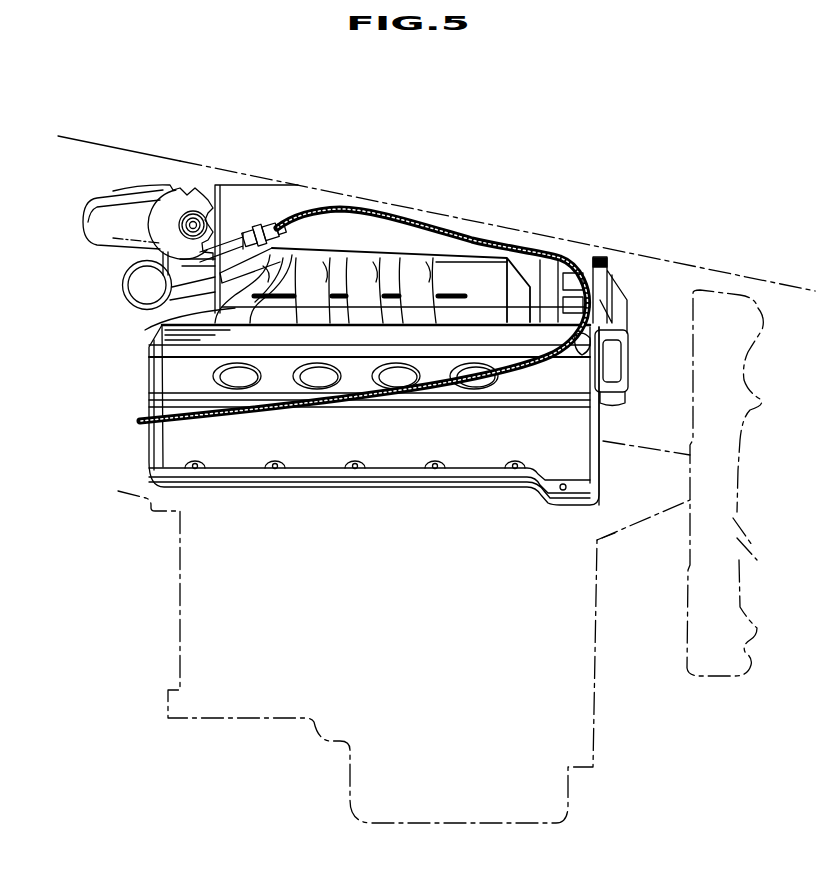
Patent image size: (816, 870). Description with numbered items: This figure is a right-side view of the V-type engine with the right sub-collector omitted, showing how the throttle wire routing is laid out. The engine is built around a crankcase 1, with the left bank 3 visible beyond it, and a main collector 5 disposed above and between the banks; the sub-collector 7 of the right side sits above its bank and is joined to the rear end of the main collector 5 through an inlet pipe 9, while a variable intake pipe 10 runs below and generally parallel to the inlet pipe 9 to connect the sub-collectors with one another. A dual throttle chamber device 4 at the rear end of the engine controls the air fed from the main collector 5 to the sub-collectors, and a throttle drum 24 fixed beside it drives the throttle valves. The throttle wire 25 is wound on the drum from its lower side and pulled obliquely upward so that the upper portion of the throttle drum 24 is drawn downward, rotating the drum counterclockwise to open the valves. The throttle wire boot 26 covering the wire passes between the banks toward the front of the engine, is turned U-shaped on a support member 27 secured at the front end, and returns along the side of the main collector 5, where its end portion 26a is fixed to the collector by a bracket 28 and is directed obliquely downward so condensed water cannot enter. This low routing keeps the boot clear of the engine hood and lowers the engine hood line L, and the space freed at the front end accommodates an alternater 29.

The crankcase 1 is at (429, 556).
The bank 3 is at (405, 455).
The throttle chamber device 4 is at (200, 200).
The main collector 5 is at (378, 240).
The sub-collector 7 is at (177, 328).
The inlet pipe 9 is at (95, 222).
The variable intake pipe 10 is at (122, 290).
The throttle drum 24 is at (170, 207).
The throttle wire 25 is at (220, 252).
The throttle wire boot 26 is at (470, 240).
The end portion of the throttle wire boot 26a is at (240, 224).
The support member 27 is at (560, 356).
The bracket 28 is at (268, 240).
The alternater 29 is at (620, 324).
The engine hood line L is at (584, 243).